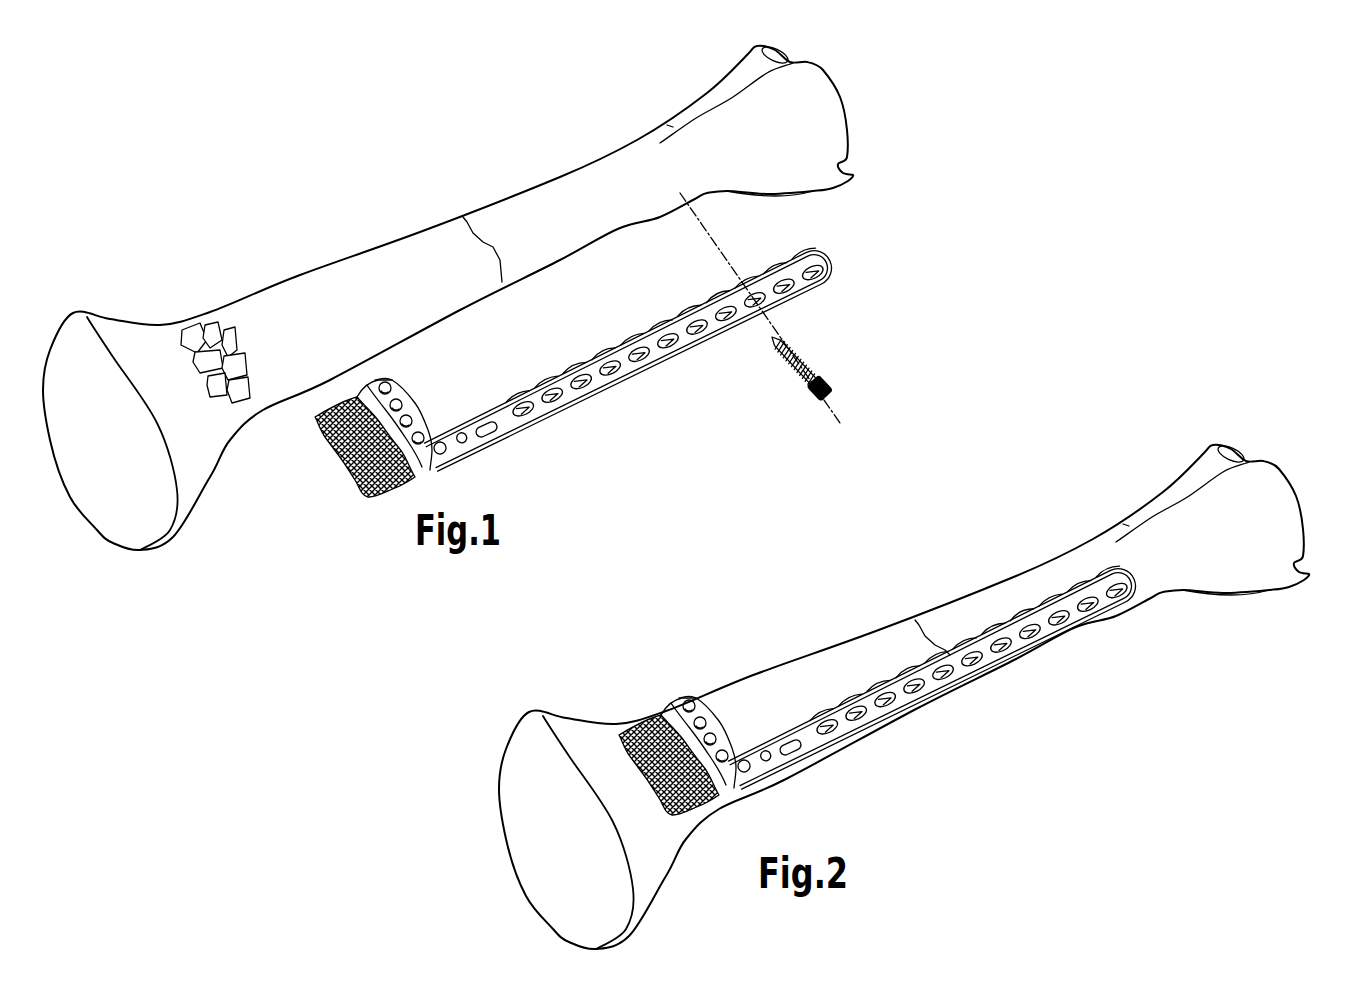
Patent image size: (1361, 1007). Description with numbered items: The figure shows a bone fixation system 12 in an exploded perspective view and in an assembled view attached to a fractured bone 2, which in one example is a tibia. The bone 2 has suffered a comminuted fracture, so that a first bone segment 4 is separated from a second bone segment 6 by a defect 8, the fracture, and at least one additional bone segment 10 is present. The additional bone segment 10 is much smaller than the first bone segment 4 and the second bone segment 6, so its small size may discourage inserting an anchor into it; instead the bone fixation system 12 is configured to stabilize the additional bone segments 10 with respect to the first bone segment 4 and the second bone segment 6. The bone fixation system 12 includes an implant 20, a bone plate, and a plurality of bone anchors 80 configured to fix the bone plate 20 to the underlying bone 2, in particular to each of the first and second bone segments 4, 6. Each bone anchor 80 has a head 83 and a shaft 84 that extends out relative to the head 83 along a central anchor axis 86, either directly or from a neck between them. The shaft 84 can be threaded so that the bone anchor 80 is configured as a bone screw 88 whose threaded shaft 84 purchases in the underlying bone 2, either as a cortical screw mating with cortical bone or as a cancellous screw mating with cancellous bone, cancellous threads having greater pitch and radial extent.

In FIG. 1, the bone 2 is at (588, 164).
In FIG. 2, the bone 2 is at (1061, 556).
In FIG. 1, the first bone segment 4 is at (540, 227).
In FIG. 2, the first bone segment 4 is at (970, 618).
In FIG. 1, the second bone segment 6 is at (378, 272).
In FIG. 2, the second bone segment 6 is at (817, 687).
In FIG. 1, the defect 8 is at (483, 237).
In FIG. 2, the defect 8 is at (913, 637).
In FIG. 1, the additional bone segment 10 is at (198, 345).
In FIG. 1, the bone fixation system 12 is at (631, 367).
In FIG. 2, the bone fixation system 12 is at (962, 680).
In FIG. 1, the implant 20 is at (558, 420).
In FIG. 2, the implant 20 is at (1025, 647).
In FIG. 1, the bone anchor 80 is at (829, 395).
In FIG. 1, the screw head 83 is at (810, 393).
In FIG. 1, the shaft 84 is at (848, 304).
In FIG. 1, the central anchor axis 86 is at (766, 322).
In FIG. 1, the bone screw 88 is at (812, 380).